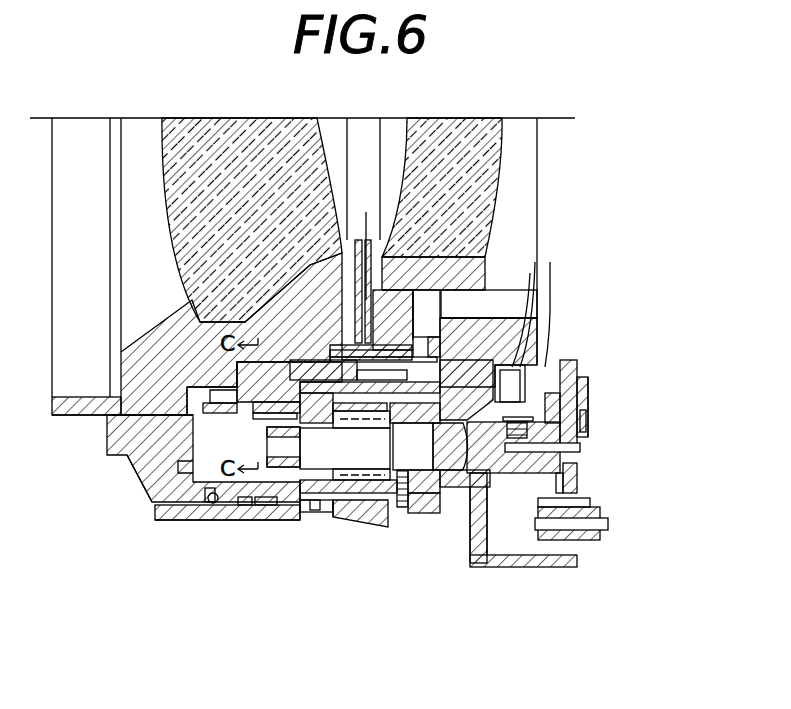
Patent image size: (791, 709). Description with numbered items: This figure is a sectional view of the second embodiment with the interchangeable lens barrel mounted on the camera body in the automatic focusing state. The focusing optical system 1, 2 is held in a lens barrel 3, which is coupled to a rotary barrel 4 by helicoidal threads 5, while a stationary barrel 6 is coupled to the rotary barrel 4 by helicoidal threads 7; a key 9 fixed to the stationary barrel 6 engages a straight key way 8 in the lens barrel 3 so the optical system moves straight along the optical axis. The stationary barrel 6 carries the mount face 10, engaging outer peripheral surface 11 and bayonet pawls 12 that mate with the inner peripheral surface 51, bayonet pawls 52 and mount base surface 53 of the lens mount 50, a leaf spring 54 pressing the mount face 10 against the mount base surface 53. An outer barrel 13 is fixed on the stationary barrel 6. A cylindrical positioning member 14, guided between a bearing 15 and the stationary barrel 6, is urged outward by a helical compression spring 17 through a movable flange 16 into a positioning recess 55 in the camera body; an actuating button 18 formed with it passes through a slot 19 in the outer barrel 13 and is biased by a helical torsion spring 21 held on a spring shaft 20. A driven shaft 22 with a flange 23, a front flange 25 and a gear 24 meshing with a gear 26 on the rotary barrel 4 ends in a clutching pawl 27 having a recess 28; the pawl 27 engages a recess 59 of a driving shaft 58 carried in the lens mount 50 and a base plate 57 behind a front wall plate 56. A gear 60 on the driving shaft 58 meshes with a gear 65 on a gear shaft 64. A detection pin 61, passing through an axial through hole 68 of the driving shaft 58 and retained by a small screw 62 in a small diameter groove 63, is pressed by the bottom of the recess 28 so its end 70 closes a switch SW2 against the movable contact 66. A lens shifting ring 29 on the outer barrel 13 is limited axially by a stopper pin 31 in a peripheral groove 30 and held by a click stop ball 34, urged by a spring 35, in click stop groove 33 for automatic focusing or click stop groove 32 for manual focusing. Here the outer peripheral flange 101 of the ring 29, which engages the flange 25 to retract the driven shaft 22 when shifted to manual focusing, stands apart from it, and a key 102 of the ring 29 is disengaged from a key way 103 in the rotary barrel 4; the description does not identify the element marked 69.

The optical system for focusing 1 is at (220, 124).
The optical system for focusing 2 is at (432, 126).
The lens barrel 3 is at (152, 350).
The rotary barrel 4 is at (235, 391).
The helicoidal threads 5 is at (343, 351).
The stationary barrel 6 is at (456, 527).
The helicoidal threads 7 is at (327, 365).
The straight key way 8 is at (390, 351).
The key 9 is at (406, 331).
The interchangeable mount face 10 is at (441, 297).
The engaging outer peripheral surface 11 is at (489, 303).
The bayonet pawls 12 is at (552, 313).
The outer barrel 13 is at (300, 500).
The cylindrical positioning member 14 is at (404, 510).
The bearing 15 is at (285, 374).
The movable flange 16 is at (416, 395).
The helical compression spring 17 is at (300, 359).
The actuating button 18 is at (303, 520).
The slot 19 is at (310, 505).
The spring shaft 20 is at (321, 510).
The helical torsion bias spring 21 is at (336, 512).
The driven shaft 22 is at (429, 458).
The flange 23 is at (361, 445).
The gear 24 is at (328, 448).
The flange 25 is at (141, 465).
The gear 26 is at (287, 402).
The clutching pawl 27 is at (362, 524).
The recess 28 is at (412, 522).
The lens shifting ring 29 is at (113, 432).
The peripheral groove 30 is at (226, 520).
The stopper pin 31 is at (261, 506).
The click stop groove 32 is at (246, 506).
The click stop groove 33 is at (211, 503).
The click stop ball 34 is at (207, 503).
The spring 35 is at (177, 522).
The lens mount 50 is at (488, 352).
The inner peripheral surface 51 is at (489, 303).
The bayonet pawls 52 is at (524, 300).
The mount base surface 53 is at (464, 487).
The leaf spring 54 is at (545, 367).
The positioning recess 55 is at (481, 490).
The front wall plate 56 is at (581, 559).
The base plate 57 is at (587, 370).
The driving shaft 58 is at (496, 487).
The recess 59 is at (494, 487).
The gear 60 is at (590, 367).
The detection pin 61 is at (581, 466).
The small screw 62 is at (568, 367).
The small diameter groove 63 is at (565, 482).
The gear shaft 64 is at (611, 524).
The gear 65 is at (593, 502).
The movable contact 66 is at (589, 456).
The axial through hole 68 is at (591, 395).
The cover 69 is at (554, 260).
The end of detection pin 70 is at (585, 446).
The outer peripheral flange 101 is at (194, 429).
The key 102 is at (223, 388).
The key way 103 is at (192, 400).
The switch SW2 is at (588, 425).